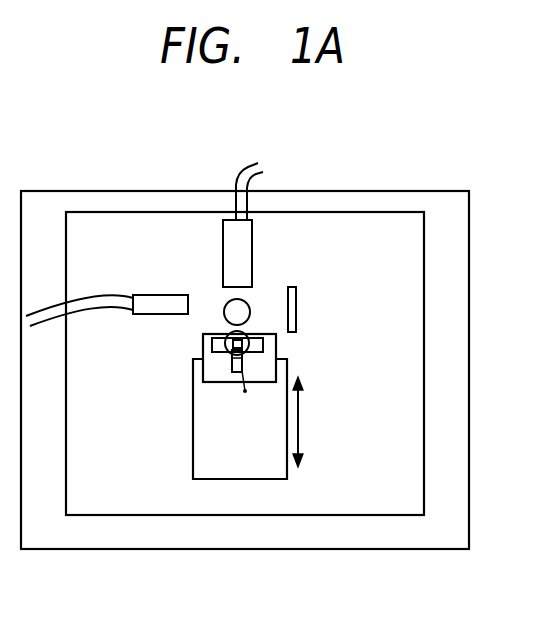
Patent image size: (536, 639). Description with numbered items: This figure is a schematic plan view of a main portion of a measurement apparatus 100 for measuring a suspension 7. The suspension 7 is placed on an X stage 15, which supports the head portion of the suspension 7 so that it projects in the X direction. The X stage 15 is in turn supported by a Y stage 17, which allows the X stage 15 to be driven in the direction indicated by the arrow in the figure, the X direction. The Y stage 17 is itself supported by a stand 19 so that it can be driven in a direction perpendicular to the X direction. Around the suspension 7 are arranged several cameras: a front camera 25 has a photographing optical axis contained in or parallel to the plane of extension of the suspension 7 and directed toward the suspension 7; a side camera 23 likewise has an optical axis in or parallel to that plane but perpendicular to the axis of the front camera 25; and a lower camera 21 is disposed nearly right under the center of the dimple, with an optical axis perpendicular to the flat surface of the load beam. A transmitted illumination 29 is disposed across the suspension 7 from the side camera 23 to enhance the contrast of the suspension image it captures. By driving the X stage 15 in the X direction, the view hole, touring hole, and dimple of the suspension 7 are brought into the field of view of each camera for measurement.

The measurement apparatus 100 is at (438, 135).
The stand 19 is at (398, 503).
The side camera 23 is at (157, 303).
The front camera 25 is at (243, 241).
The lower camera 21 is at (244, 307).
The transmitted illumination 29 is at (296, 302).
The Y stage 17 is at (242, 470).
The X stage 15 is at (212, 372).
The suspension 7 is at (243, 357).